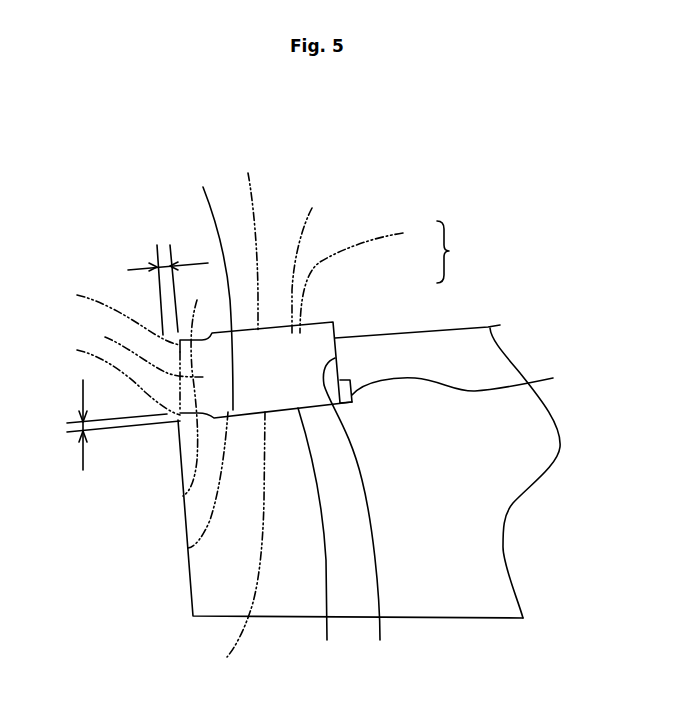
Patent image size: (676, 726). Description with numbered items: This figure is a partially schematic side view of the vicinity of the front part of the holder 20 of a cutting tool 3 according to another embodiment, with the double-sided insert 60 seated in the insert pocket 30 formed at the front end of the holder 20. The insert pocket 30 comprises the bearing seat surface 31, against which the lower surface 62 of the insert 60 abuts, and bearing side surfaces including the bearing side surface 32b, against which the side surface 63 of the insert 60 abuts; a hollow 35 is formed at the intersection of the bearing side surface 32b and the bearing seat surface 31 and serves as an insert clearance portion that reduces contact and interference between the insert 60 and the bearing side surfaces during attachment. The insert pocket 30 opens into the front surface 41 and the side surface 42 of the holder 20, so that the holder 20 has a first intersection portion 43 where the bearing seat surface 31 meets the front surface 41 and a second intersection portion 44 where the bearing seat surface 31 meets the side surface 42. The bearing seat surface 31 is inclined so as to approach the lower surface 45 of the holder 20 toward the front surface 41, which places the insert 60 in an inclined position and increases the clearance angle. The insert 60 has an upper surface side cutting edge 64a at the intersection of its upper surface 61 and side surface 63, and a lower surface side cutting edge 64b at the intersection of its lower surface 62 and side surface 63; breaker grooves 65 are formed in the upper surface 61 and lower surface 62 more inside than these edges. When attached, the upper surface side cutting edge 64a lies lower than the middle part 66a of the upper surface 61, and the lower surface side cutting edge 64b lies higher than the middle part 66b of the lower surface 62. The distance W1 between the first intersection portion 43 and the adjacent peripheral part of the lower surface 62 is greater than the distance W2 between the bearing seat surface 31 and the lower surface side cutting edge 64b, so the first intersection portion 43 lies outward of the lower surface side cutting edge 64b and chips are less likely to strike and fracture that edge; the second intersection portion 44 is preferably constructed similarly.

The cutting tool 3 is at (451, 252).
The holder 20 is at (372, 347).
The insert pocket 30 is at (273, 406).
The bearing seat surface 31 is at (210, 288).
The bearing side surface 32b is at (362, 511).
The hollow 35 is at (465, 385).
The front surface 41 is at (188, 575).
The side surface 42 is at (273, 553).
The first intersection portion 43 is at (180, 421).
The second intersection portion 44 is at (317, 536).
The lower surface 45 is at (217, 617).
The insert 60 is at (365, 277).
The upper surface 61 is at (314, 261).
The lower surface 62 is at (188, 548).
The side surface 63 is at (140, 348).
The upper surface side cutting edge 64a is at (106, 313).
The lower surface side cutting edge 64b is at (108, 378).
The breaker groove 65 is at (153, 510).
The middle part of upper surface 66a is at (243, 240).
The middle part of lower surface 66b is at (236, 548).
The distance W1 is at (168, 277).
The distance W2 is at (59, 425).